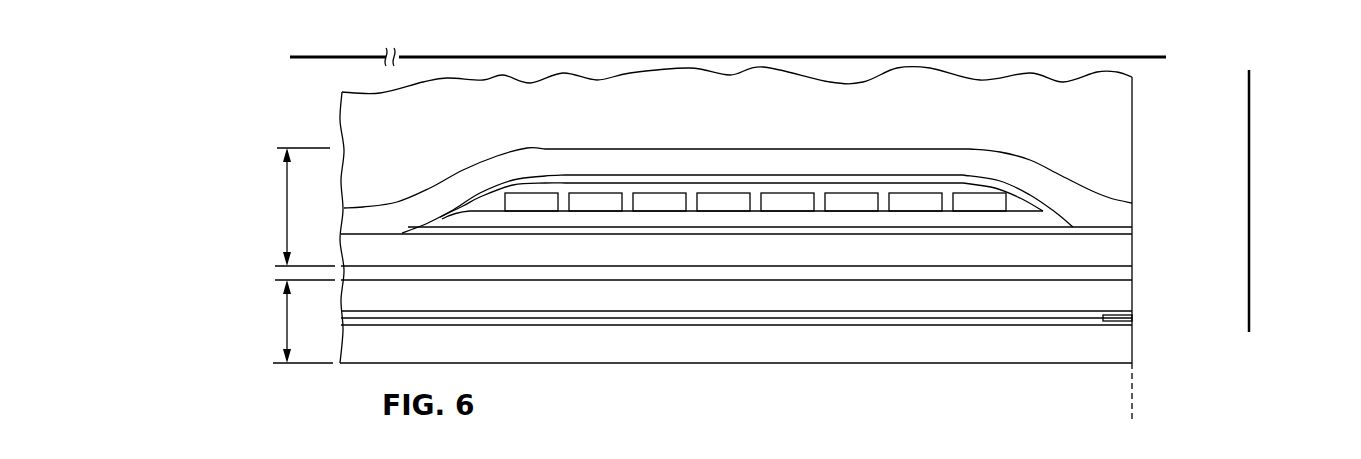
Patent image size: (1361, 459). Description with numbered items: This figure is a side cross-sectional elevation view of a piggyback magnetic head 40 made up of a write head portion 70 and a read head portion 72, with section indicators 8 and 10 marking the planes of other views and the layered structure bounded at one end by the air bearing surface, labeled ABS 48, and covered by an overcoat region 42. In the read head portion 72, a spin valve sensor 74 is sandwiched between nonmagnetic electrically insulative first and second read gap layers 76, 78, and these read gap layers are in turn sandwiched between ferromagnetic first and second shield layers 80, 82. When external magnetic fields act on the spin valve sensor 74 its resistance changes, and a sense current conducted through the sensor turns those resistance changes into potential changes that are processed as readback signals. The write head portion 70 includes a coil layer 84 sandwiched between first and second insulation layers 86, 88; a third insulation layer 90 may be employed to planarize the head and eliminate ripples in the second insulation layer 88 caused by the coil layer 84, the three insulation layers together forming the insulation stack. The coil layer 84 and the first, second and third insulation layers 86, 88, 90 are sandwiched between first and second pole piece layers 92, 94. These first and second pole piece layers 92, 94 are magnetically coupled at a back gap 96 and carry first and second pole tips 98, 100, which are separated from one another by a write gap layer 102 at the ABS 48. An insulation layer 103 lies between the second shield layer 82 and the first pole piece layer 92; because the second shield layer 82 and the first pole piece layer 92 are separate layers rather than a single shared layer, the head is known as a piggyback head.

The section line 8- 8 is at (1266, 73).
The section line 10- 10 is at (298, 15).
The piggyback magnetic head 40 is at (323, 108).
The overcoat layer 42 is at (1117, 107).
The air bearing surface (ABS) 48 is at (1132, 417).
The write head portion 70 is at (283, 211).
The read head portion 72 is at (283, 324).
The spin valve sensor 74 is at (1133, 317).
The first read gap layer 76 is at (803, 325).
The second read gap layer 78 is at (770, 308).
The first shield layer 80 is at (905, 348).
The second shield layer 82 is at (1007, 298).
The coil layer 84 is at (718, 198).
The first insulation layer 86 is at (694, 220).
The second insulation layer 88 is at (1020, 203).
The third insulation layer 90 is at (570, 178).
The first pole piece layer 92 is at (1052, 255).
The second pole piece layer 94 is at (918, 158).
The back gap 96 is at (382, 235).
The first pole tip 98 is at (1133, 254).
The second pole tip 100 is at (1127, 212).
The write gap layer 102 is at (1133, 230).
The insulation layer 103 is at (960, 273).